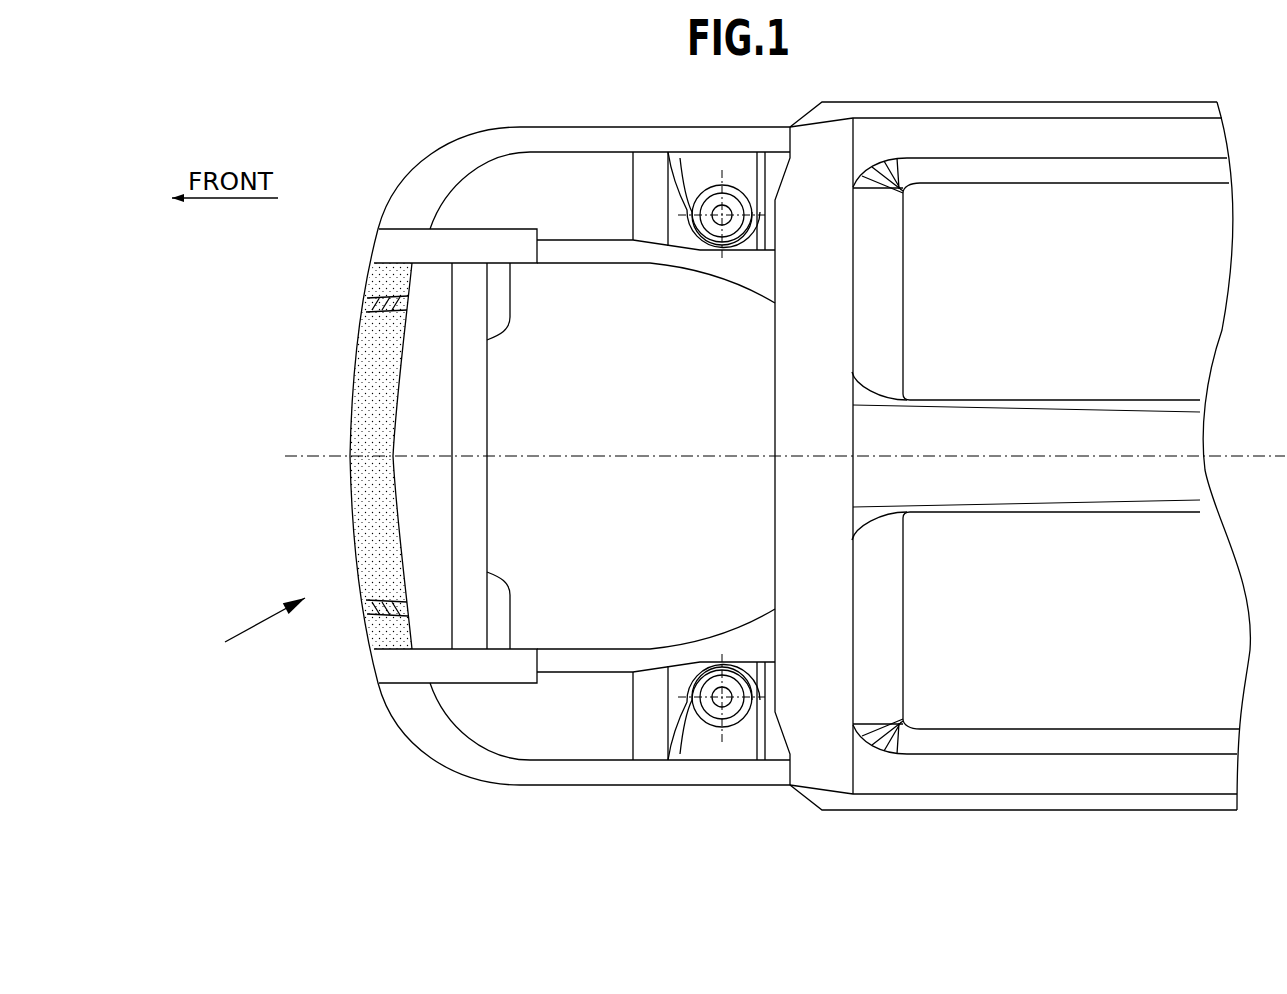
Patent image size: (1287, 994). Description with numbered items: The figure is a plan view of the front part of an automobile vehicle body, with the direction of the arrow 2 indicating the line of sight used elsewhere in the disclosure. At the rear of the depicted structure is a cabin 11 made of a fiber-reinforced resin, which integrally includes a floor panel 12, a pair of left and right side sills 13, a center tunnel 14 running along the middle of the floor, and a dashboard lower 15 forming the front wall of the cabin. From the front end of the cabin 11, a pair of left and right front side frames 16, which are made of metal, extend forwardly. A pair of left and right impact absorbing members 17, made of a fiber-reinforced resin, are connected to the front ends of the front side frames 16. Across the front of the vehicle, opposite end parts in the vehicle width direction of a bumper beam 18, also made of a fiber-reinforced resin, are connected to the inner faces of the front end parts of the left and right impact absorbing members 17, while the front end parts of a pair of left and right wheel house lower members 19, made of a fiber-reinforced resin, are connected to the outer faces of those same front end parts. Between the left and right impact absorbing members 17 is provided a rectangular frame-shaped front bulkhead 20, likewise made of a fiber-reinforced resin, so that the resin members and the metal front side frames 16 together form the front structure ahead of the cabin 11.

The viewing direction arrow 2 is at (222, 660).
The cabin 11 is at (1042, 96).
The floor panel 12 is at (1075, 313).
The side sill 13 is at (1082, 150).
The center tunnel 14 is at (1058, 488).
The dashboard lower 15 is at (785, 407).
The front side frame 16 is at (652, 258).
The impact absorbing member 17 is at (487, 240).
The bumper beam 18 is at (363, 385).
The wheel house lower member 19 is at (607, 130).
The front bulkhead 20 is at (478, 410).